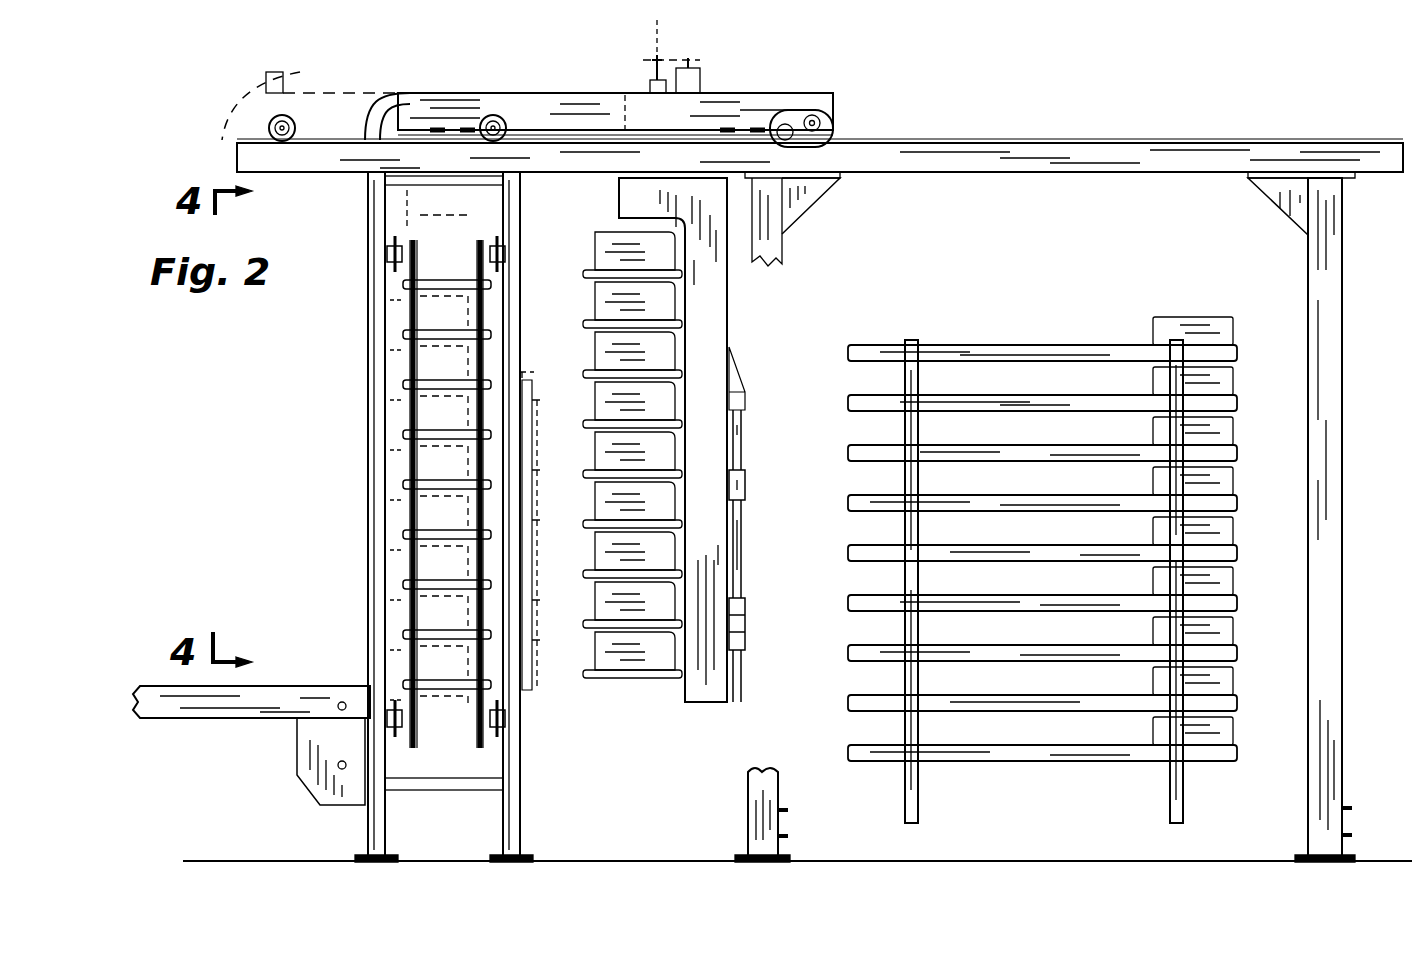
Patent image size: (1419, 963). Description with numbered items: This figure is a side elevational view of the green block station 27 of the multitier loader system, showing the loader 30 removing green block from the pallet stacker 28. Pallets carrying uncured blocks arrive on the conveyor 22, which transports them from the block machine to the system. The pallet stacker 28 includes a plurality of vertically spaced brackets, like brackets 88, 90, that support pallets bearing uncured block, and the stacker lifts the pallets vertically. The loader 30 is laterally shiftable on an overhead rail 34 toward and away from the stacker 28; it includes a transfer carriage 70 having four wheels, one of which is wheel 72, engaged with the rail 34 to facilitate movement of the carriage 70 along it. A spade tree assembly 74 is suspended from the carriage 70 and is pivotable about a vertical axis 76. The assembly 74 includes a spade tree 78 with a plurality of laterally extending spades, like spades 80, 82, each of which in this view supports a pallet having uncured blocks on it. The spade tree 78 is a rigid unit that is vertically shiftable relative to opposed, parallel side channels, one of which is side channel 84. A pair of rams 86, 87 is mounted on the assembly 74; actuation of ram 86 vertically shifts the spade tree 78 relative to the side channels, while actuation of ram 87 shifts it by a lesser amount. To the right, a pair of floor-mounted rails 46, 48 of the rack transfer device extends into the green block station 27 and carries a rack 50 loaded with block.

The conveyor 22 is at (284, 688).
The green block station 27 is at (1356, 610).
The pallet stacker 28 is at (385, 517).
The loader 30 is at (798, 226).
The overhead rail 34 is at (1069, 157).
The rail 46 is at (928, 798).
The rail 48 is at (1158, 798).
The rack 50 is at (1042, 560).
The transfer carriage 70 is at (752, 98).
The wheel 72 is at (506, 116).
The spade tree assembly 74 is at (647, 457).
The vertical axis 76 is at (658, 40).
The spade tree 78 is at (652, 686).
The spade 80 is at (590, 682).
The spade 82 is at (587, 626).
The side channel 84 is at (705, 490).
The ram 86 is at (736, 563).
The ram 87 is at (738, 632).
The bracket 88 is at (418, 288).
The bracket 90 is at (342, 480).